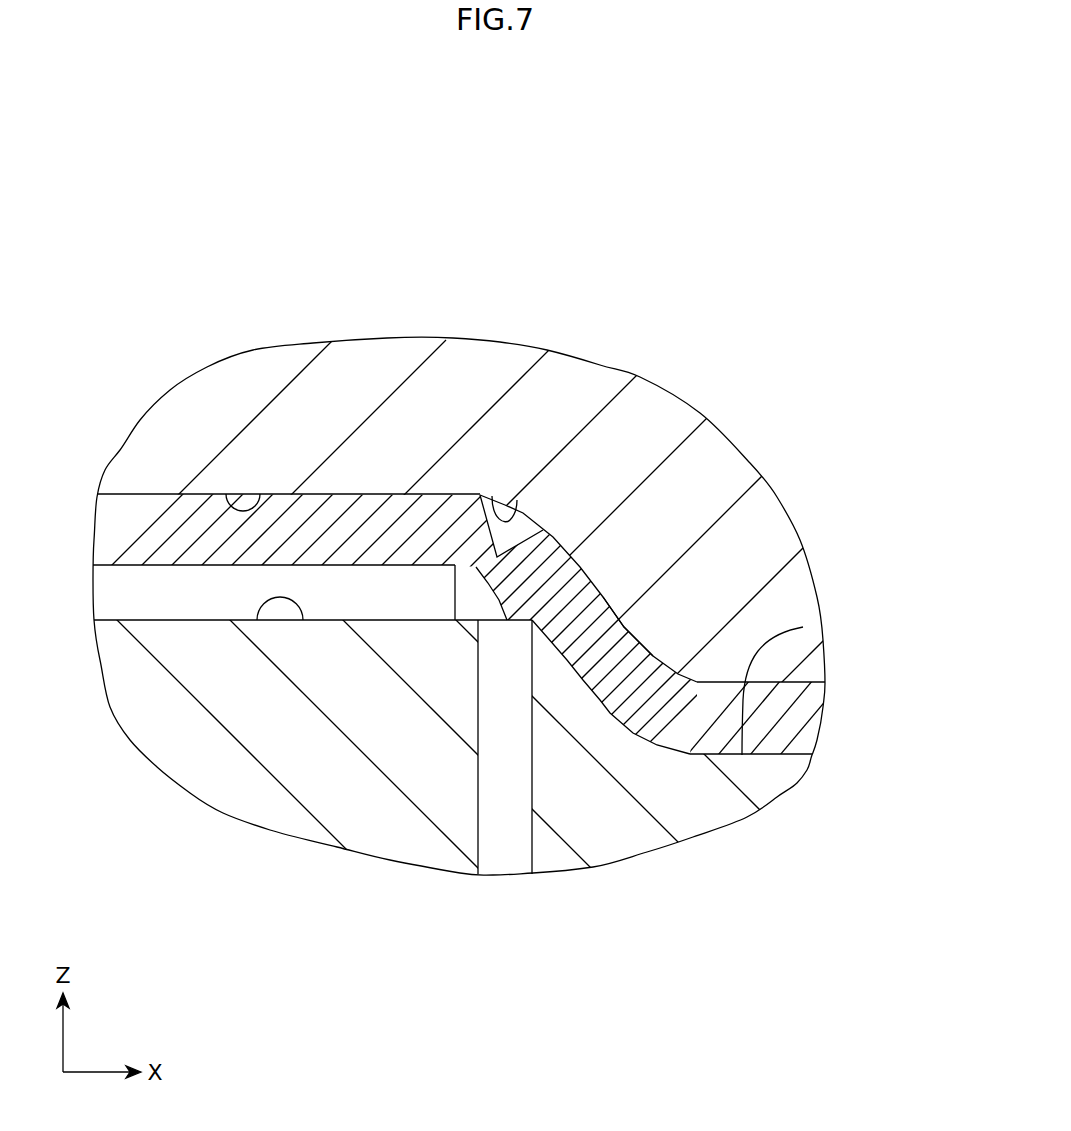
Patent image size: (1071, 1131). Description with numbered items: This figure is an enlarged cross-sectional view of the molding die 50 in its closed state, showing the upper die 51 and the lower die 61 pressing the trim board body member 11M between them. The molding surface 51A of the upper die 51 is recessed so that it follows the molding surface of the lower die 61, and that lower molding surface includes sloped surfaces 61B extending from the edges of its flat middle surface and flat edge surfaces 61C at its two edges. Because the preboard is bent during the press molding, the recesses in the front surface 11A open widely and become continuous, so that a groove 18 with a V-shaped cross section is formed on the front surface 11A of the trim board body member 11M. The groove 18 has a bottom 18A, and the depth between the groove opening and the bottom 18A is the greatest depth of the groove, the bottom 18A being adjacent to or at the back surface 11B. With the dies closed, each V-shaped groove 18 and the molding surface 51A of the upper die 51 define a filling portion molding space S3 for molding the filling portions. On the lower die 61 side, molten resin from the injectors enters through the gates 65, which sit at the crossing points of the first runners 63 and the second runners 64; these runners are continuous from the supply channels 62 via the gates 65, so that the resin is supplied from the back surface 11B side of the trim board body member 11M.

The front surface 11A is at (190, 493).
The back surface 11B is at (190, 565).
The trim board body member 11M is at (335, 512).
The groove 18 is at (525, 515).
The bottom 18A is at (468, 620).
The molding die 50 is at (905, 663).
The upper die 51 is at (795, 653).
The molding surface 51A is at (226, 494).
The lower die 61 is at (760, 784).
The sloped surfaces 61B is at (612, 626).
The flat edge surfaces 61C is at (803, 627).
The supply channels 62 is at (532, 830).
The first runners 63 is at (306, 620).
The second runners 64 is at (478, 577).
The gates 65 is at (562, 557).
The filling portion molding space S3 is at (497, 497).